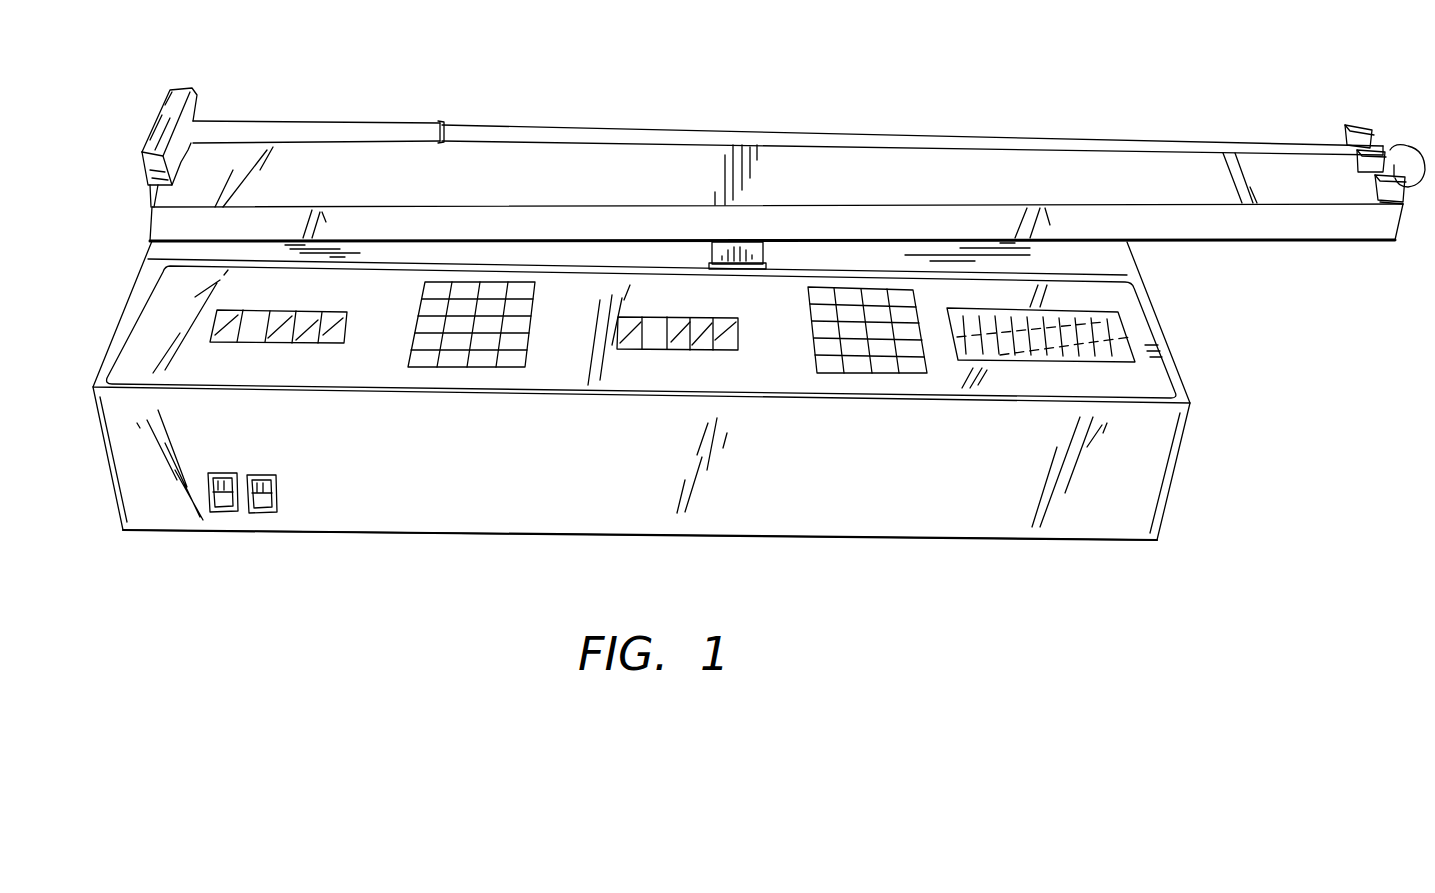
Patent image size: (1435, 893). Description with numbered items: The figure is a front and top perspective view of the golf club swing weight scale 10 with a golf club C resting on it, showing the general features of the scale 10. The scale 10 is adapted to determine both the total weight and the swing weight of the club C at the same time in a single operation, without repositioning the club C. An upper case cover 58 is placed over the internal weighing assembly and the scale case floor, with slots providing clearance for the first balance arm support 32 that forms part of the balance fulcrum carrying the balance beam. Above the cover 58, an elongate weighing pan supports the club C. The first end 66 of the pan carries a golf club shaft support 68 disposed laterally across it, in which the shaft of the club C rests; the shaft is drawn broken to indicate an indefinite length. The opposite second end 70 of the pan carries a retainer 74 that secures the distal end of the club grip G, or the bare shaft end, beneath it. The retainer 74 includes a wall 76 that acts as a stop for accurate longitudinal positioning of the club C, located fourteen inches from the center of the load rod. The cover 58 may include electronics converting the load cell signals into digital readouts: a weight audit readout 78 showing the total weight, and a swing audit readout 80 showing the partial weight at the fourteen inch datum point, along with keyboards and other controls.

The golf club swing weight scale 10 is at (932, 622).
The first balance arm support 32 is at (713, 253).
The upper case cover 58 is at (588, 490).
The first end of the pan 66 is at (1389, 243).
The golf club shaft support 68 is at (1352, 126).
The second end of the pan 70 is at (152, 226).
The retainer 74 is at (162, 110).
The wall 76 is at (152, 193).
The weight audit readout 78 is at (707, 350).
The swing audit readout 80 is at (302, 343).
The club grip G is at (287, 120).
The golf club C is at (842, 135).